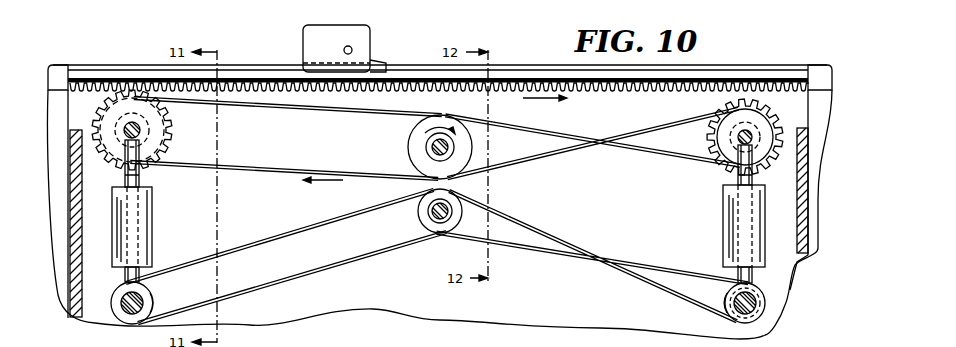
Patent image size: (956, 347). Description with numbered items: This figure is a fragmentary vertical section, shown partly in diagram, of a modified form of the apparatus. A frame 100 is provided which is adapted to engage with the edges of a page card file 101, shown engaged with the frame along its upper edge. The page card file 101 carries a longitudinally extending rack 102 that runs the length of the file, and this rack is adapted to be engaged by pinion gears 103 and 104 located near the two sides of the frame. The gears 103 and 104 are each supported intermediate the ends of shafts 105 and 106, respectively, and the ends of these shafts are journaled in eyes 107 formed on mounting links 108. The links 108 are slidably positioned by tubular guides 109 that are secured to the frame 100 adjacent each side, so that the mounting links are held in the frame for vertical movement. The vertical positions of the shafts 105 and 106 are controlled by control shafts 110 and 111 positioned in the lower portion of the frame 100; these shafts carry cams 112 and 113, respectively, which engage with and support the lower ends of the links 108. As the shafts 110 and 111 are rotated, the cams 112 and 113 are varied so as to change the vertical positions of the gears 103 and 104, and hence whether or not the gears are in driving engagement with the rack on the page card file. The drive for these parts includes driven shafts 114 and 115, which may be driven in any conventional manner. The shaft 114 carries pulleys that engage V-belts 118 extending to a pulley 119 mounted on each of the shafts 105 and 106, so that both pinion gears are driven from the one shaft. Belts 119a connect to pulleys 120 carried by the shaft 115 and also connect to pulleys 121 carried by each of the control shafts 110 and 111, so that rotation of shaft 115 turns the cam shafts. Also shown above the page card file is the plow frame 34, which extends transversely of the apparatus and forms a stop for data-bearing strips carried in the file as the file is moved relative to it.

The plow frame 34 is at (364, 44).
The frame 100 is at (417, 312).
The page card file 101 is at (740, 78).
The rack 102 is at (657, 88).
The pinion gear 103 is at (160, 121).
The pinion gear 104 is at (766, 120).
The shaft 105 is at (138, 131).
The shaft 106 is at (738, 136).
The eye 107 is at (770, 178).
The mounting link 108 is at (140, 178).
The tubular guide 109 is at (152, 228).
The control shaft 110 is at (129, 317).
The control shaft 111 is at (762, 309).
The cam 112 is at (121, 284).
The cam 113 is at (757, 290).
The driven shaft 114 is at (431, 148).
The driven shaft 115 is at (430, 215).
The V-belt 118 is at (305, 117).
The pulley 119 is at (150, 152).
The belt 119a is at (310, 266).
The pulley 120 is at (447, 200).
The pulley 121 is at (153, 299).